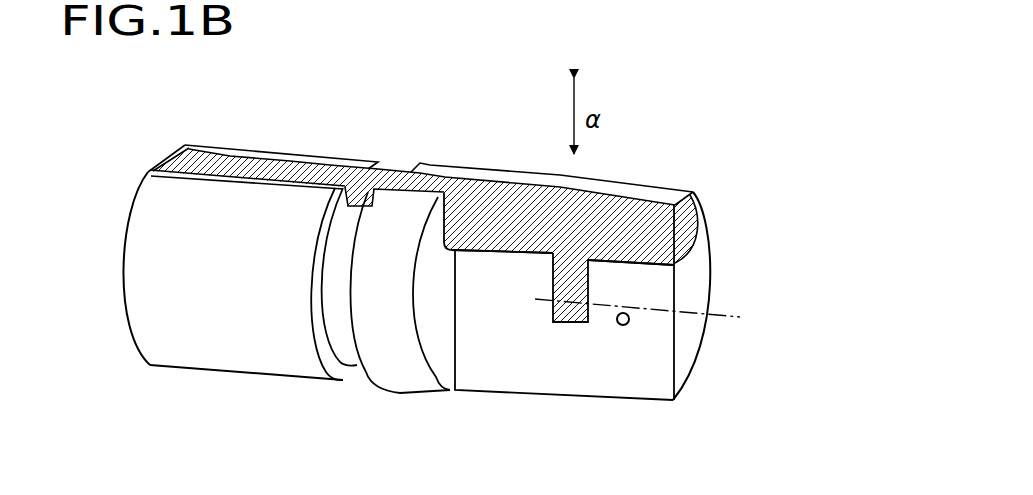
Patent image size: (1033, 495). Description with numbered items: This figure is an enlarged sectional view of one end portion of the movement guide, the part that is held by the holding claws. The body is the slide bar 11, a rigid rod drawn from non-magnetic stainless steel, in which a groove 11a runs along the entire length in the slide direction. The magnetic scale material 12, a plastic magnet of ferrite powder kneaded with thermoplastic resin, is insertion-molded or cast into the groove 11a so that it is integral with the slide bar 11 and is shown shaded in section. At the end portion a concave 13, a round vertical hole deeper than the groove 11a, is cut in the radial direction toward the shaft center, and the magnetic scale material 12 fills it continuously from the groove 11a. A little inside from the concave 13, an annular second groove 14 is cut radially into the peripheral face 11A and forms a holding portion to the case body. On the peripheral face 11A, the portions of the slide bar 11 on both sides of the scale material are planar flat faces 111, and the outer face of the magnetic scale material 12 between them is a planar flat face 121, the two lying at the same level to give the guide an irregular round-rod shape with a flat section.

The slide bar 11 is at (687, 343).
The groove 11a is at (632, 258).
The peripheral face 11A is at (400, 363).
The magnetic scale material 12 is at (683, 210).
The flat face 121 is at (357, 172).
The flat face 111 is at (419, 176).
The concave 13 is at (578, 296).
The second groove 14 is at (343, 313).